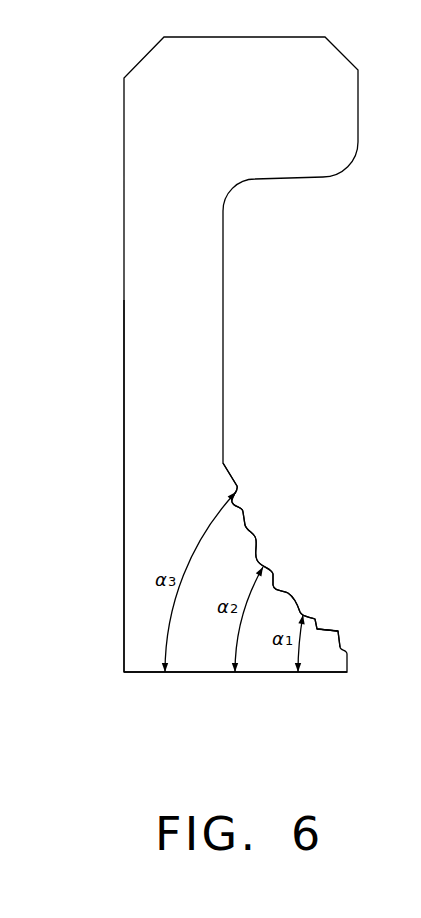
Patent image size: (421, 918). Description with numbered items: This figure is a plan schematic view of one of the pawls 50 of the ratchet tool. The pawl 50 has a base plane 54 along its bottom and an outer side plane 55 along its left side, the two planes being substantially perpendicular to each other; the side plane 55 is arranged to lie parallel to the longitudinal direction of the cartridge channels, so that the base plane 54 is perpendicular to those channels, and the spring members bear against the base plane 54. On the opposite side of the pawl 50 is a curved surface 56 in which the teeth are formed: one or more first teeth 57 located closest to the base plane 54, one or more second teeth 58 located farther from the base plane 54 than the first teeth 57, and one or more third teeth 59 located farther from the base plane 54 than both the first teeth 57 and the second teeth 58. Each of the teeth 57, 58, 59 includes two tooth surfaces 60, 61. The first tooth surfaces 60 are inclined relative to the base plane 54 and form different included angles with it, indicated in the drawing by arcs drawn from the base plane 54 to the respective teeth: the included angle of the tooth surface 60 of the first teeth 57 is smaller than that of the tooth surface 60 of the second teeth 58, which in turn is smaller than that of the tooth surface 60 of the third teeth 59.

The pawl 50 is at (148, 190).
The base plane 54 is at (205, 673).
The outer side plane 55 is at (137, 531).
The curved surface 56 is at (260, 537).
The first tooth 57 is at (318, 619).
The second tooth 58 is at (284, 592).
The third tooth 59 is at (244, 503).
The first tooth surface 60 is at (304, 616).
The second tooth surface 61 is at (325, 630).